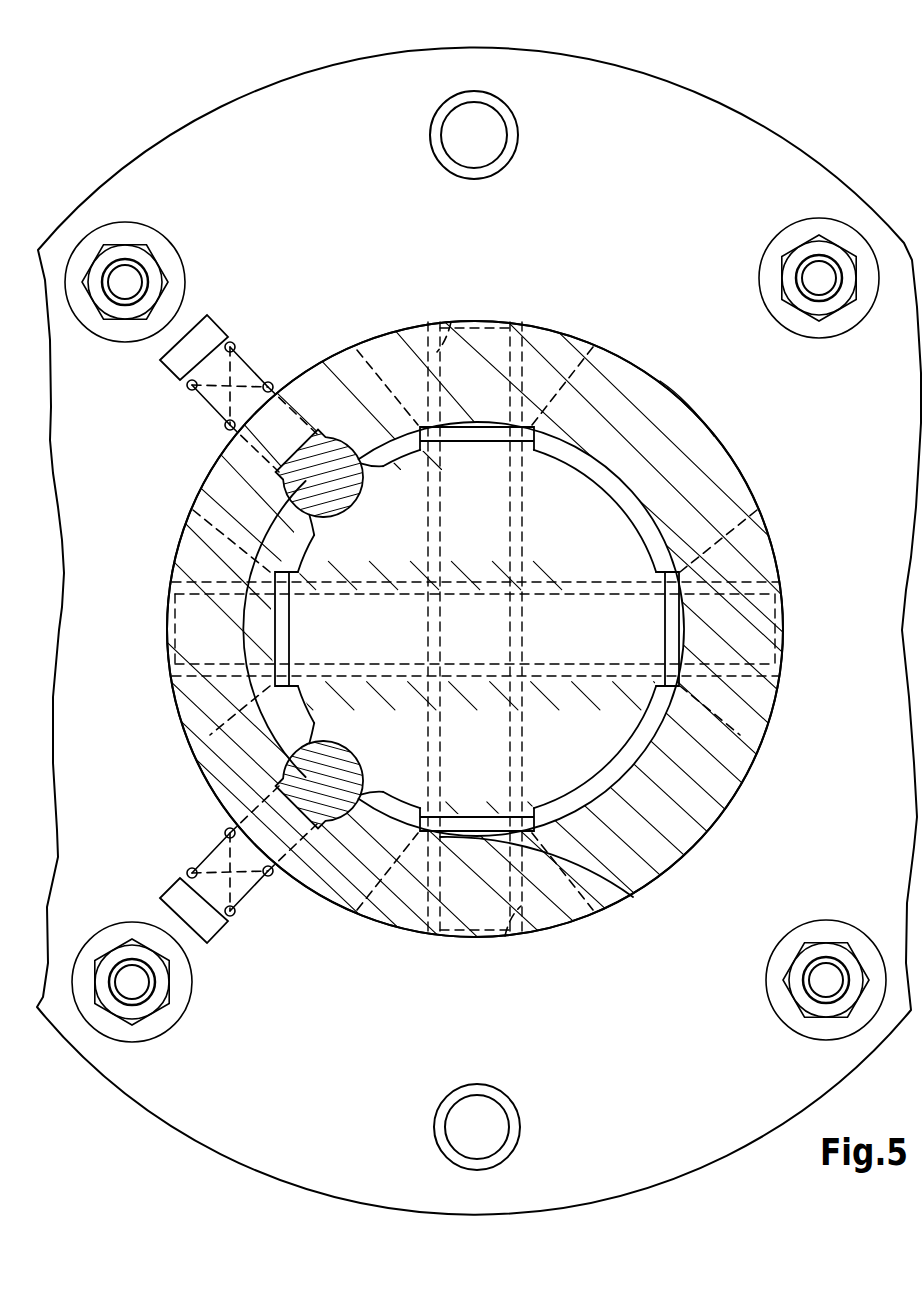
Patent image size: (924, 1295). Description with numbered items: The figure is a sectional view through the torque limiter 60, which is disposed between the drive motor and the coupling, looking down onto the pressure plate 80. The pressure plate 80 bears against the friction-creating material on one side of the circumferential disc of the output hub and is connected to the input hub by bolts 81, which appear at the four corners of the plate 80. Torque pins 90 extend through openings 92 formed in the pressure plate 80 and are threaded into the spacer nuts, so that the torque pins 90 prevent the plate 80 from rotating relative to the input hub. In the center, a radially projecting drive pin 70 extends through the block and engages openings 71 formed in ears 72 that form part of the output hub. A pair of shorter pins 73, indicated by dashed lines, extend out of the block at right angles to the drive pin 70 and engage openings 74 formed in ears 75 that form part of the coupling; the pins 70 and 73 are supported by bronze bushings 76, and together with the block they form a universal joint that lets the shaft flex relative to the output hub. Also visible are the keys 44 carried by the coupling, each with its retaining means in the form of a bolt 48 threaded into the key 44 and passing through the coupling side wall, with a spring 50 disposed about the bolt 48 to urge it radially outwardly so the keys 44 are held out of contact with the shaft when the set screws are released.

The keys 44 is at (350, 478).
The bolt 48 is at (210, 333).
The spring 50 is at (230, 427).
The torque limiter 60 is at (776, 91).
The drive pin 70 is at (478, 352).
The openings 71 is at (451, 322).
The ears 72 is at (558, 347).
The shorter pins 73 is at (192, 612).
The openings 74 is at (182, 652).
The ears 75 is at (758, 556).
The bronze bushings 76 is at (674, 648).
The pressure plate 80 is at (680, 1107).
The bolts 81 is at (133, 277).
The torque pins 90 is at (493, 137).
The openings 92 is at (443, 143).